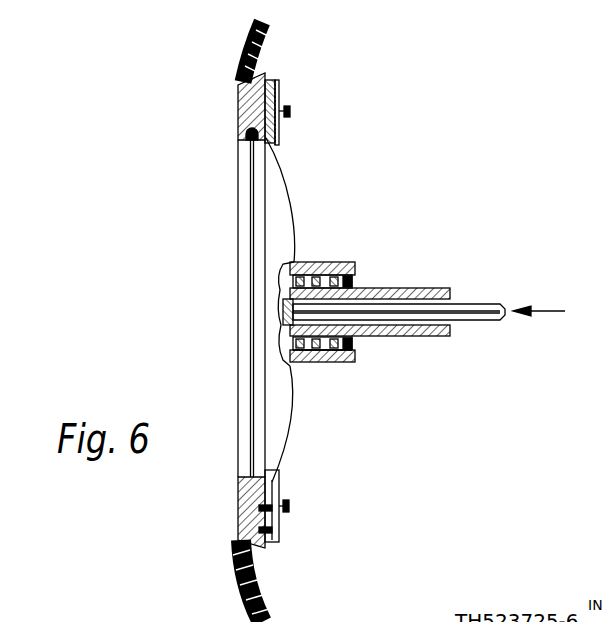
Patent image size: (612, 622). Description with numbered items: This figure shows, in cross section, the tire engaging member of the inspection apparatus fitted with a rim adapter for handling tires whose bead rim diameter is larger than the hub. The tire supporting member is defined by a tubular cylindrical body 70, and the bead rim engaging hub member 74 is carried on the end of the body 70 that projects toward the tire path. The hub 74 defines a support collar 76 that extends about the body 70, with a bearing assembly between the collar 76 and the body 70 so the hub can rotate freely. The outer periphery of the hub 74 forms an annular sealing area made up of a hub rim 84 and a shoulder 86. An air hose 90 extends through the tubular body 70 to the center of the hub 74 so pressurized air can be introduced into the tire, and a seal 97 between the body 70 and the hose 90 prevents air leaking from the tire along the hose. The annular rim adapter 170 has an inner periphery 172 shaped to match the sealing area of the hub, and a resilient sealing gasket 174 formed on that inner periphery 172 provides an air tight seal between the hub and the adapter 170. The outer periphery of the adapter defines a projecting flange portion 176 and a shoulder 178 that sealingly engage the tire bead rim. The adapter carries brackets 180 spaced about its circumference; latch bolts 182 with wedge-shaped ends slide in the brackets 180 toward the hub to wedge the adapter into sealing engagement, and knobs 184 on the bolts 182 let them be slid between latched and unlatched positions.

The tubular cylindrical body 70 is at (412, 288).
The bead rim engaging hub member 74 is at (283, 202).
The support collar 76 is at (317, 362).
The hub rim 84 is at (250, 298).
The shoulder 86 is at (242, 362).
The air hose 90 is at (463, 320).
The seal 97 is at (317, 277).
The rim adapter 170 is at (238, 102).
The inner periphery 172 is at (240, 123).
The resilient sealing gasket 174 is at (240, 137).
The projecting flange portion 176 is at (265, 74).
The shoulder 178 is at (237, 83).
The brackets 180 is at (278, 81).
The latch bolts 182 is at (280, 98).
The knobs 184 is at (288, 118).